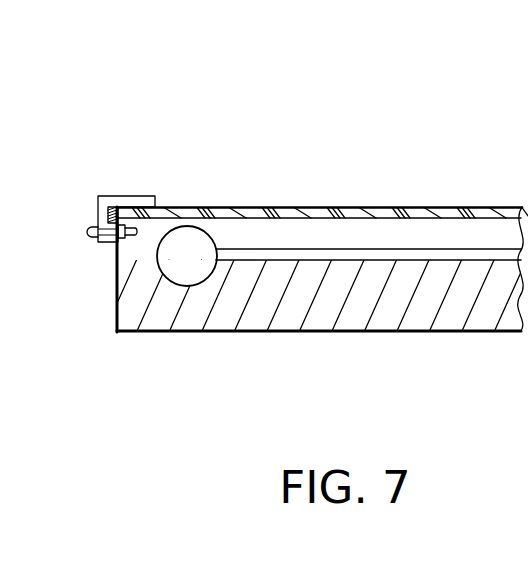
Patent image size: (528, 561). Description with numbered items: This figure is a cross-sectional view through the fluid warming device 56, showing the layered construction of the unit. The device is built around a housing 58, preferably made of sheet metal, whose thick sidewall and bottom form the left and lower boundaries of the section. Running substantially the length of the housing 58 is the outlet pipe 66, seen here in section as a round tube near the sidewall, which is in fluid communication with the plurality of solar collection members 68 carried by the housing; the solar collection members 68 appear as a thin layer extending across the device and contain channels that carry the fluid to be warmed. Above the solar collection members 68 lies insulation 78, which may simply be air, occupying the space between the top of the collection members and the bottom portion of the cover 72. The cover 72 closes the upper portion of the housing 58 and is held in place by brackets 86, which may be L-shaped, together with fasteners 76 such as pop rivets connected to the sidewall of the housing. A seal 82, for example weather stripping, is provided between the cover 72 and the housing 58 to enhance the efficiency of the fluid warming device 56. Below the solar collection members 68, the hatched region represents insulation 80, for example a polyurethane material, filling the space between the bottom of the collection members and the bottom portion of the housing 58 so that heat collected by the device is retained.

The fluid warming device 56 is at (263, 91).
The housing 58 is at (115, 326).
The outlet pipe 66 is at (160, 262).
The solar collection members 68 is at (350, 255).
The cover 72 is at (313, 207).
The fasteners 76 is at (92, 232).
The insulation 78 is at (378, 232).
The insulation 80 is at (255, 317).
The seal 82 is at (110, 208).
The brackets 86 is at (133, 196).